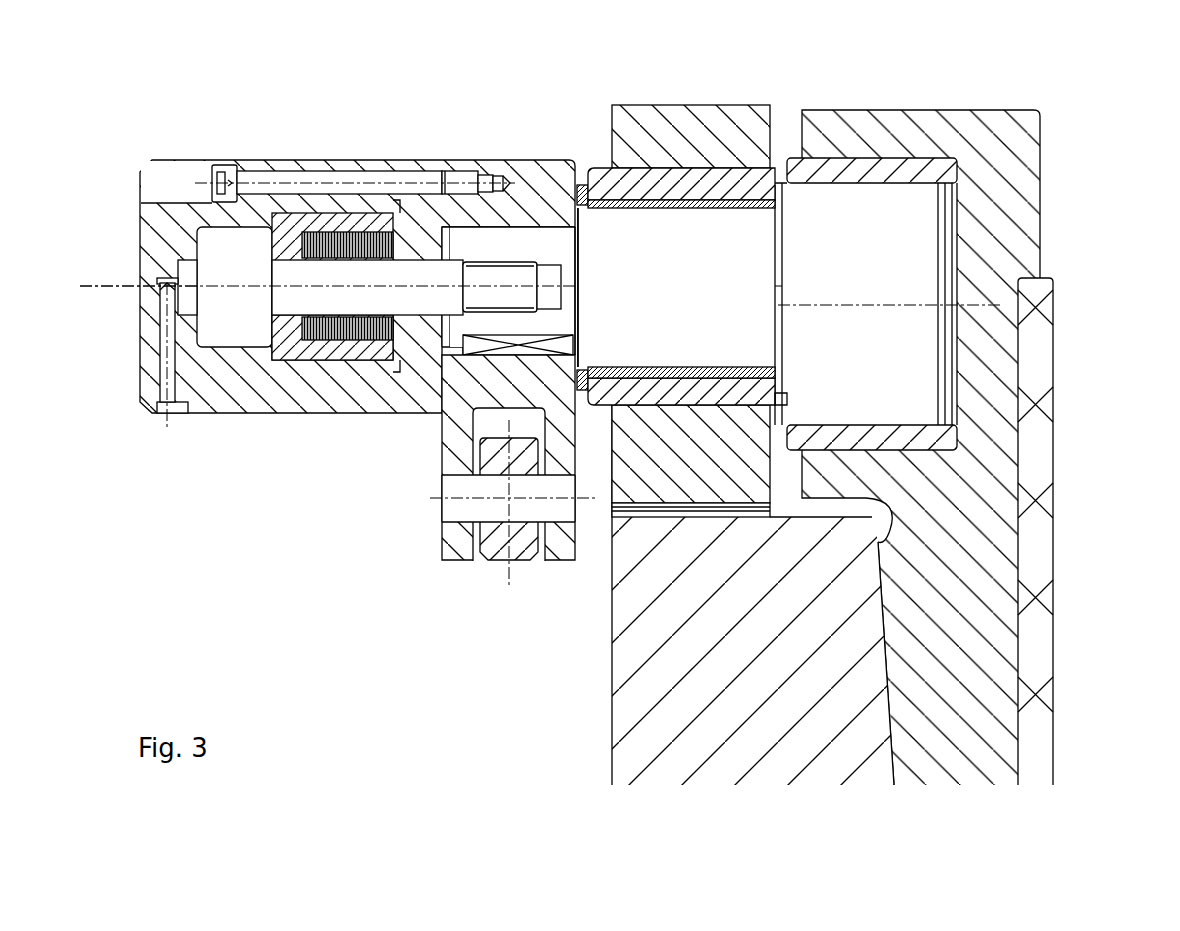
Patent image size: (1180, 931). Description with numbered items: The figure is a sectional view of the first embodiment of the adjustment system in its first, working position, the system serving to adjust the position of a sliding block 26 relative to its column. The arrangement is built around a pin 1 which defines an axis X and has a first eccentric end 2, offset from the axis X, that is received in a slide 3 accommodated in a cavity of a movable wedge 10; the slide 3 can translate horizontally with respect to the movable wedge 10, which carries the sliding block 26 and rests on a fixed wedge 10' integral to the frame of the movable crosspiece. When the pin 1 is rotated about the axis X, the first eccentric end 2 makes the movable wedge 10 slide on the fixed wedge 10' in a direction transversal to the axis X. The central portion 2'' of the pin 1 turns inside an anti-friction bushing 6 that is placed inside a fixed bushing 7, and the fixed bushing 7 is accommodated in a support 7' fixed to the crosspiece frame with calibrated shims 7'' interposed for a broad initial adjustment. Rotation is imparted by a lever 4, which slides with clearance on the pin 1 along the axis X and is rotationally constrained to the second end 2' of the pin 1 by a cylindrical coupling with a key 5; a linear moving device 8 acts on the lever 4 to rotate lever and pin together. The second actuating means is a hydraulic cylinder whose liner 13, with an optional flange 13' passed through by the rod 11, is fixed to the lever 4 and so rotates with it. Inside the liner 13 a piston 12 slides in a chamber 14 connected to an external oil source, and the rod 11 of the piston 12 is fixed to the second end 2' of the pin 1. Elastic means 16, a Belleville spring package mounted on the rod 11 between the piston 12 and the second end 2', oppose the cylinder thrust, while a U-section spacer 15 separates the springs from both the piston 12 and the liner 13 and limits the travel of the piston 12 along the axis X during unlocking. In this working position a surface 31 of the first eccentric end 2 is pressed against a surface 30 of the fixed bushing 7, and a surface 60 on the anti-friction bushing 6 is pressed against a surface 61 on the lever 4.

The pin 1 is at (680, 250).
The first eccentric end 2 is at (909, 293).
The second end 2' is at (508, 219).
The central portion 2'' is at (680, 204).
The slide 3 is at (905, 170).
The lever 4 is at (463, 167).
The key 5 is at (480, 348).
The anti-friction bushing 6 is at (773, 197).
The fixed bushing 7 is at (682, 228).
The support 7' is at (691, 438).
The calibrated shims 7'' is at (647, 474).
The moving device 8 is at (508, 500).
The movable wedge 10 is at (889, 595).
The fixed wedge 10' is at (853, 706).
The rod 11 is at (368, 300).
The piston 12 is at (225, 327).
The liner 13 is at (355, 235).
The flange 13' is at (419, 220).
The chamber 14 is at (190, 298).
The spacer 15 is at (288, 223).
The elastic means 16 is at (317, 227).
The sliding block 26 is at (1040, 465).
The surface 30 is at (768, 377).
The surface 31 is at (778, 393).
The surface 60 is at (580, 185).
The surface 61 is at (575, 188).
The axis X is at (113, 283).